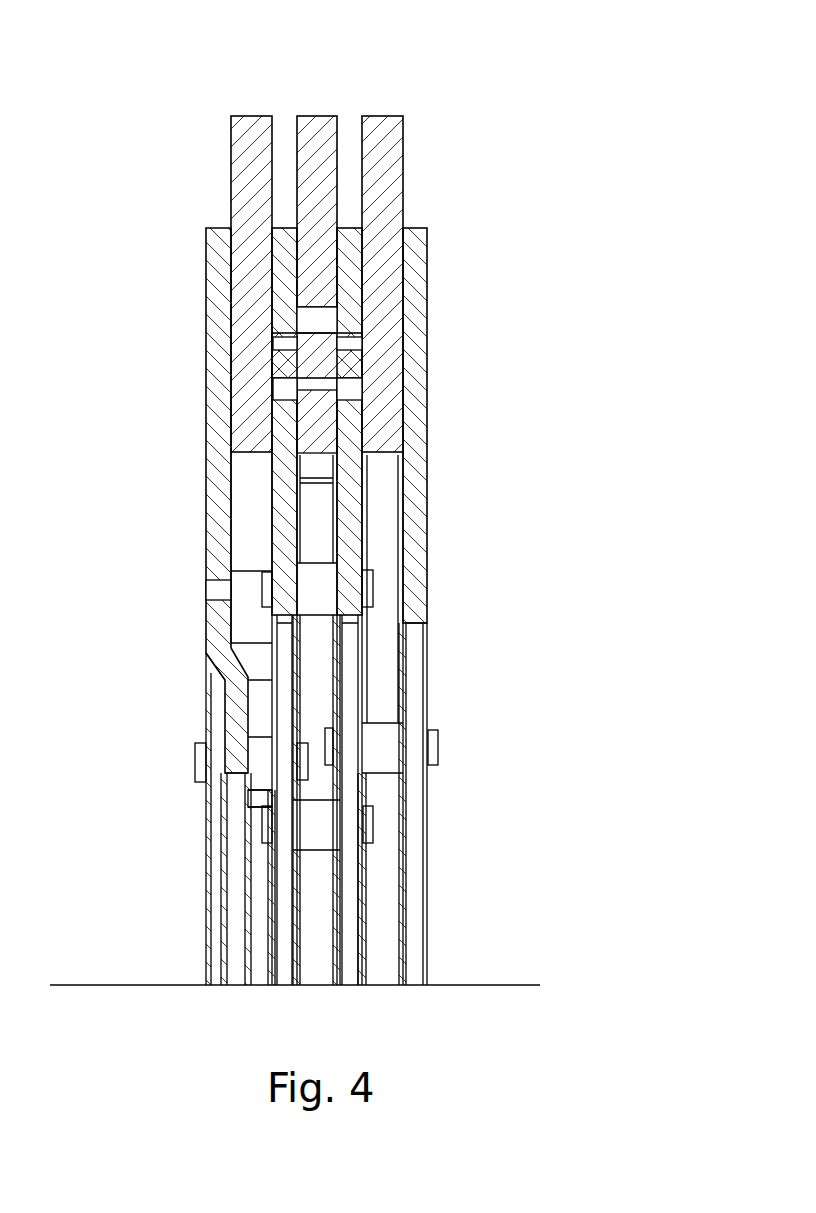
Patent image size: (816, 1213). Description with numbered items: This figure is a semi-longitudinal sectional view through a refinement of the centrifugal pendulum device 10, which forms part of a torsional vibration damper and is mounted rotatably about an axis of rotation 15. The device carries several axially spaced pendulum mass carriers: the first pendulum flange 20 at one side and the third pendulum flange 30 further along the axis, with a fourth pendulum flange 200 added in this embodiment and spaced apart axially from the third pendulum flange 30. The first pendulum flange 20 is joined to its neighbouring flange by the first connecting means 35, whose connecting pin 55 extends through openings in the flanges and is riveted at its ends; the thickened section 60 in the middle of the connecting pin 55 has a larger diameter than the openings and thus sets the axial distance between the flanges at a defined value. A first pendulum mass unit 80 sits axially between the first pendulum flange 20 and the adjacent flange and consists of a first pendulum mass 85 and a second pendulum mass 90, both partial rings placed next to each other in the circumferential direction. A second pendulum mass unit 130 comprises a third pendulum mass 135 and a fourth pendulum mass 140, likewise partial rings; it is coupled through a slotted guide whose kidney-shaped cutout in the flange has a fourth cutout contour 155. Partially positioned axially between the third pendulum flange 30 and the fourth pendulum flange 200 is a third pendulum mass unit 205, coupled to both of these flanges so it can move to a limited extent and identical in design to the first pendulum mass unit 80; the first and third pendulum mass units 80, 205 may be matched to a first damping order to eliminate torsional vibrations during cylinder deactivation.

The centrifugal pendulum device 10 is at (340, 498).
The axis of rotation 15 is at (520, 985).
The first pendulum flange 20 is at (325, 606).
The third pendulum flange 30 is at (407, 620).
The first connecting means 35 is at (197, 755).
The connecting pin 55 is at (247, 773).
The thickened section 60 is at (253, 800).
The first pendulum mass unit 80 is at (185, 498).
The first pendulum mass 85 is at (177, 284).
The second pendulum mass 90 is at (257, 190).
The second pendulum mass unit 130 is at (228, 502).
The third pendulum mass 135 is at (209, 211).
The fourth pendulum mass 140 is at (317, 153).
The fourth cutout contour 155 is at (282, 388).
The fourth pendulum flange 200 is at (413, 505).
The third pendulum mass unit 205 is at (408, 163).